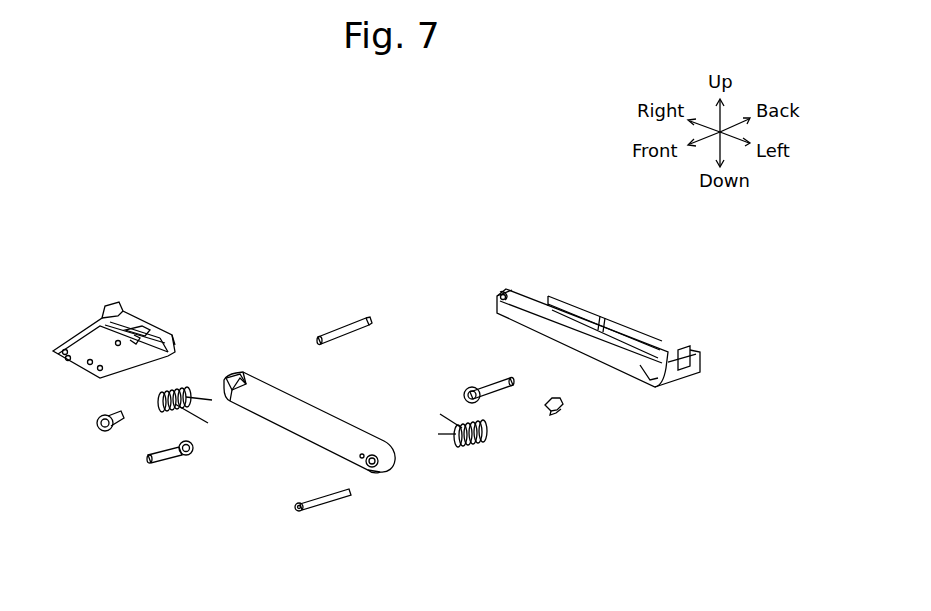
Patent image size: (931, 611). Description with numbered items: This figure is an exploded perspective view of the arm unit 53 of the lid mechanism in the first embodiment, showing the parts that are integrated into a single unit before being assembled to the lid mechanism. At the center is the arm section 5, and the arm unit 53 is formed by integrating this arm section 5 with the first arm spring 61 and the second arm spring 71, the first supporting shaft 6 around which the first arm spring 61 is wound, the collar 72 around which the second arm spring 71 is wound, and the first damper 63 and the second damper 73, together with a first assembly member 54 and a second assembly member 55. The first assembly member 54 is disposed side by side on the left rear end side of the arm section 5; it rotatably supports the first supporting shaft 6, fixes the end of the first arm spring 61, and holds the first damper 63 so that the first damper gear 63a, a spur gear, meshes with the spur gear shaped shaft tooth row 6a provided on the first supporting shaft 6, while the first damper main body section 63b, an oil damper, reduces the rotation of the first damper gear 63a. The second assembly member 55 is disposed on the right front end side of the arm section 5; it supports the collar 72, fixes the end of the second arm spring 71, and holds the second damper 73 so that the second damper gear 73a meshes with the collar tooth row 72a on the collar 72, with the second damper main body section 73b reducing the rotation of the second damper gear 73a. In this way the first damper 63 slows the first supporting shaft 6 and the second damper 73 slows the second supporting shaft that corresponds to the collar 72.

The arm unit 53 is at (397, 222).
The first assembly member 54 is at (585, 310).
The second assembly member 55 is at (143, 327).
The arm section 5 is at (320, 411).
The first supporting shaft 6 is at (326, 501).
The shaft tooth row 6a is at (556, 416).
The first arm spring 61 is at (480, 443).
The first damper 63 is at (477, 354).
The first damper gear 63a is at (460, 375).
The first damper main body section 63b is at (497, 385).
The second arm spring 71 is at (183, 393).
The collar 72 is at (340, 326).
The collar tooth row 72a is at (104, 432).
The second damper 73 is at (176, 489).
The second damper gear 73a is at (199, 468).
The second damper main body section 73b is at (160, 462).